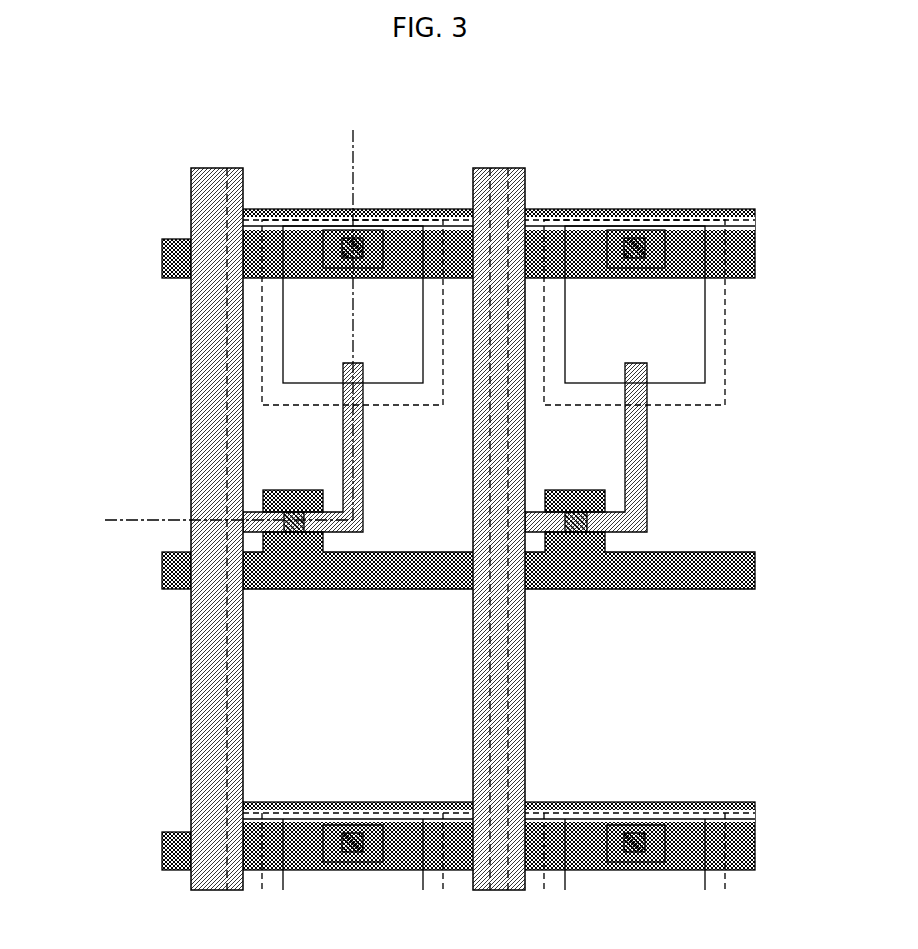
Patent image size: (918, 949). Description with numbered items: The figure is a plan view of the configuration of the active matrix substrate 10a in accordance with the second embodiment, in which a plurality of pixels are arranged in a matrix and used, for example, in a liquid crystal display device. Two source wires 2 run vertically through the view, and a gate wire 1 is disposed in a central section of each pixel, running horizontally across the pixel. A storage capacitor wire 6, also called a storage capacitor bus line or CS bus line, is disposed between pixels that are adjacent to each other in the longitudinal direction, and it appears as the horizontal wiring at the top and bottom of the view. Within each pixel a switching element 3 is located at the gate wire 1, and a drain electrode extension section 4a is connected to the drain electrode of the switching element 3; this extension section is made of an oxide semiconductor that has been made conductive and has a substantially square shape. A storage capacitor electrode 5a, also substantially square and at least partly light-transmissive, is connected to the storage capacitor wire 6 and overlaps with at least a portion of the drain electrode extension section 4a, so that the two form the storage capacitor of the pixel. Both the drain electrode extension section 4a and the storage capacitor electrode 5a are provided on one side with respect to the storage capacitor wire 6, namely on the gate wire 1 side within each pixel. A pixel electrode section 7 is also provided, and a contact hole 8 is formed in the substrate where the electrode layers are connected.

The gate wire 1 is at (180, 570).
The source wire 2 is at (207, 690).
The switching element 3 is at (290, 526).
The drain electrode extension section 4a is at (408, 383).
The storage capacitor electrode 5a is at (377, 407).
The storage capacitor wire 6 is at (177, 262).
The pixel electrode section 7 is at (228, 362).
The contact hole 8 is at (357, 242).
The active matrix substrate 10a is at (474, 115).